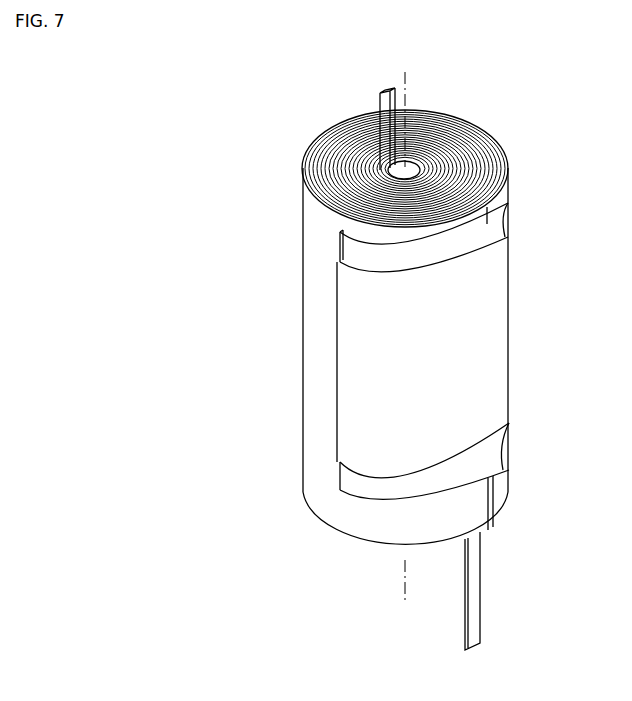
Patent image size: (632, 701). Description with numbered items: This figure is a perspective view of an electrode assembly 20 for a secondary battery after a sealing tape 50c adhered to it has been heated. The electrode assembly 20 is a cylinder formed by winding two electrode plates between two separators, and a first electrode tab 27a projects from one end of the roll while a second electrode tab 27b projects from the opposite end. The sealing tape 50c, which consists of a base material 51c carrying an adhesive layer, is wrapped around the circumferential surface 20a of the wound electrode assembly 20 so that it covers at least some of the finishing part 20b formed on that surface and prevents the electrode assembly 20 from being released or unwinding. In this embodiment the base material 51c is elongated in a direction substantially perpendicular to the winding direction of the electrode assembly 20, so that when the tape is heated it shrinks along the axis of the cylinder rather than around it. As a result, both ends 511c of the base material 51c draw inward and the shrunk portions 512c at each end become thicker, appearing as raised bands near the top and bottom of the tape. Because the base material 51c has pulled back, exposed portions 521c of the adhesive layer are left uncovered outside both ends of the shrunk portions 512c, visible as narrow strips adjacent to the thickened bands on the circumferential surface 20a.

The electrode assembly 20 is at (490, 170).
The circumferential surface 20a is at (318, 275).
The finishing part 20b is at (485, 212).
The first electrode tab 27a is at (388, 89).
The second electrode tab 27b is at (477, 590).
The sealing tape 50c is at (497, 402).
The base material 51c is at (497, 343).
The ends of the base material 511c is at (505, 204).
The shrunk portions 512c is at (360, 278).
The exposed portions 521c is at (362, 255).